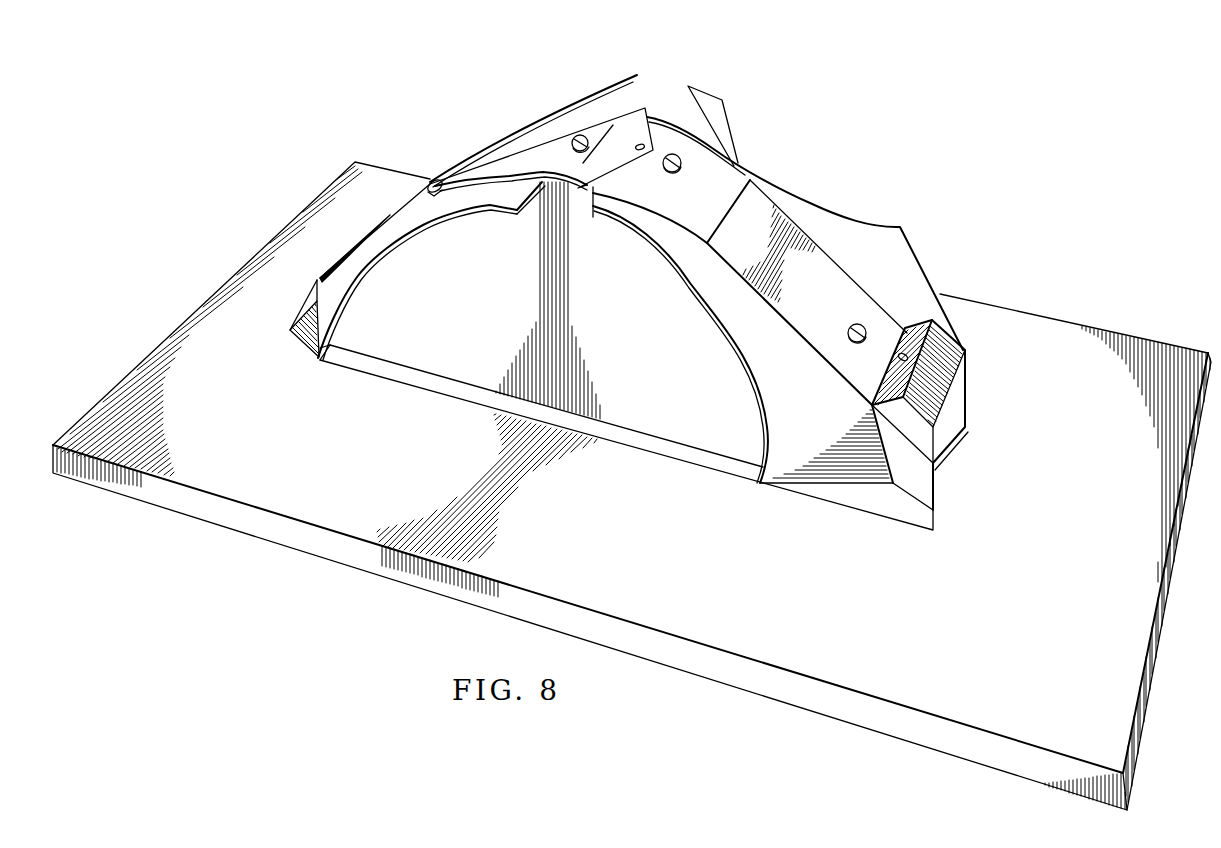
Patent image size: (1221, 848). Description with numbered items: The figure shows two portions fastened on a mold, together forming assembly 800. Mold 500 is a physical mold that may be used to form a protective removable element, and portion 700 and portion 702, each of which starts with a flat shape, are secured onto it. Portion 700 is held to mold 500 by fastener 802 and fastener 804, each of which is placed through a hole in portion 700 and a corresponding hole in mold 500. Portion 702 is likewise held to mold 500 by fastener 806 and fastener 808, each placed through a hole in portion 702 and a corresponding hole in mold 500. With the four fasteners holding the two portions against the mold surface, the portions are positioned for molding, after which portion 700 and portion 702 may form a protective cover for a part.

The assembly 800 is at (275, 81).
The mold 500 is at (250, 261).
The portion 700 is at (510, 130).
The portion 702 is at (783, 173).
The fastener 802 is at (436, 180).
The fastener 804 is at (576, 134).
The fastener 806 is at (676, 154).
The fastener 808 is at (852, 325).